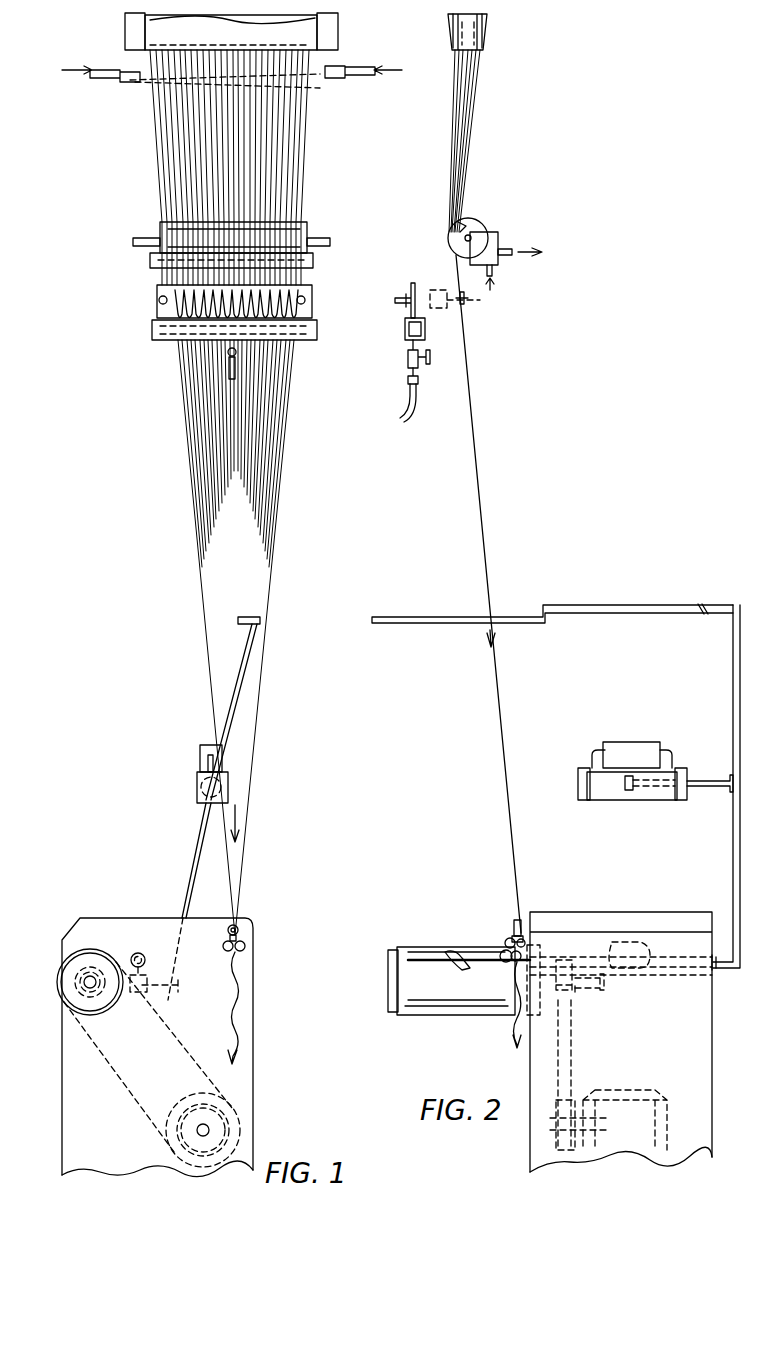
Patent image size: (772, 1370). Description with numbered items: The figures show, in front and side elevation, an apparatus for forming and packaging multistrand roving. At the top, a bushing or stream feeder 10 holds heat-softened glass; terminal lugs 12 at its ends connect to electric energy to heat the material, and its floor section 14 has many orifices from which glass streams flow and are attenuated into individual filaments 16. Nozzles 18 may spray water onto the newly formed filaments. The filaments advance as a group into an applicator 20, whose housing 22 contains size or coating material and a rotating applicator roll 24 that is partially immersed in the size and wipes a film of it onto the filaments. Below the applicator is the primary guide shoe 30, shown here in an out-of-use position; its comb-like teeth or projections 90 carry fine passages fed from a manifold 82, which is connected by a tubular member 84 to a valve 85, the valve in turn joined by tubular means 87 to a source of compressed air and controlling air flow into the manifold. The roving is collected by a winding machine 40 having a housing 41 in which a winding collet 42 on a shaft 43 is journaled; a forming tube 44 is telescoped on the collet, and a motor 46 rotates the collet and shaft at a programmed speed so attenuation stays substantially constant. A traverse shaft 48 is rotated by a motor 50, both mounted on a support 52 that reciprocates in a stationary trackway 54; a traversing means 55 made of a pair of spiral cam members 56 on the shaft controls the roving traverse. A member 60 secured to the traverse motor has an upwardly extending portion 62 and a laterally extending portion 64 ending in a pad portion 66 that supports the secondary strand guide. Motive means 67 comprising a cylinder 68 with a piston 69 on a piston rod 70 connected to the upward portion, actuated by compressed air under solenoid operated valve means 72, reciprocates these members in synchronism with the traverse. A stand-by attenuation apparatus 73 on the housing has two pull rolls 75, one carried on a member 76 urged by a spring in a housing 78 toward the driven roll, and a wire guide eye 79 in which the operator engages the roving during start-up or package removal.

In FIG. 1, the stream feeder 10 is at (275, 39).
In FIG. 2, the stream feeder 10 is at (438, 30).
In FIG. 1, the terminal lugs 12 is at (128, 30).
In FIG. 2, the terminal lugs 12 is at (488, 22).
In FIG. 1, the floor section 14 is at (205, 45).
In FIG. 2, the floor section 14 is at (480, 38).
In FIG. 1, the filaments 16 is at (208, 136).
In FIG. 2, the filaments 16 is at (460, 90).
In FIG. 1, the nozzles 18 is at (125, 83).
In FIG. 1, the applicator 20 is at (314, 229).
In FIG. 2, the applicator 20 is at (506, 214).
In FIG. 1, the housing 22 is at (152, 262).
In FIG. 2, the housing 22 is at (500, 240).
In FIG. 1, the applicator roll 24 is at (166, 226).
In FIG. 2, the applicator roll 24 is at (468, 218).
In FIG. 1, the primary guide shoe 30 is at (143, 304).
In FIG. 2, the primary guide shoe 30 is at (400, 278).
In FIG. 1, the teeth or projections 90 is at (232, 302).
In FIG. 1, the manifold 82 is at (152, 334).
In FIG. 2, the manifold 82 is at (405, 325).
In FIG. 2, the tubular member 84 is at (408, 352).
In FIG. 1, the valve 85 is at (228, 357).
In FIG. 2, the valve 85 is at (410, 366).
In FIG. 2, the tubular means 87 is at (408, 404).
In FIG. 1, the pad portion 66 is at (258, 620).
In FIG. 2, the pad portion 66 is at (420, 626).
In FIG. 2, the laterally extending portion 64 is at (640, 604).
In FIG. 1, the upwardly extending portion 62 is at (204, 812).
In FIG. 2, the upwardly extending portion 62 is at (733, 646).
In FIG. 1, the solenoid operated valve means 72 is at (210, 746).
In FIG. 2, the solenoid operated valve means 72 is at (640, 742).
In FIG. 1, the motive means 67 is at (189, 770).
In FIG. 2, the motive means 67 is at (612, 810).
In FIG. 1, the cylinder 68 is at (197, 792).
In FIG. 2, the cylinder 68 is at (676, 800).
In FIG. 2, the piston 69 is at (628, 792).
In FIG. 2, the piston rod 70 is at (716, 778).
In FIG. 1, the winding machine 40 is at (70, 925).
In FIG. 2, the winding machine 40 is at (621, 1020).
In FIG. 1, the housing 41 is at (66, 1100).
In FIG. 2, the housing 41 is at (530, 1136).
In FIG. 1, the winding collet 42 is at (76, 995).
In FIG. 2, the winding collet 42 is at (396, 995).
In FIG. 2, the shaft 43 is at (545, 950).
In FIG. 1, the forming tube 44 is at (57, 980).
In FIG. 2, the forming tube 44 is at (398, 1012).
In FIG. 1, the motor 46 is at (180, 1145).
In FIG. 2, the motor 46 is at (628, 1090).
In FIG. 1, the traverse shaft 48 is at (134, 953).
In FIG. 2, the traverse shaft 48 is at (408, 960).
In FIG. 2, the motor 50 is at (641, 956).
In FIG. 2, the support 52 is at (608, 990).
In FIG. 2, the trackway 54 is at (625, 985).
In FIG. 1, the traversing means 55 is at (146, 940).
In FIG. 2, the traversing means 55 is at (458, 940).
In FIG. 1, the cam members 56 is at (160, 948).
In FIG. 2, the cam members 56 is at (450, 956).
In FIG. 1, the member 60 is at (160, 995).
In FIG. 2, the member 60 is at (684, 977).
In FIG. 1, the stand-by attenuation apparatus 73 is at (248, 926).
In FIG. 2, the stand-by attenuation apparatus 73 is at (506, 922).
In FIG. 1, the pull rolls 75 is at (224, 950).
In FIG. 2, the pull rolls 75 is at (508, 962).
In FIG. 1, the member 76 is at (243, 945).
In FIG. 2, the member 76 is at (520, 920).
In FIG. 1, the housing 78 is at (232, 924).
In FIG. 2, the housing 78 is at (520, 920).
In FIG. 1, the guide eye 79 is at (229, 940).
In FIG. 2, the guide eye 79 is at (505, 942).